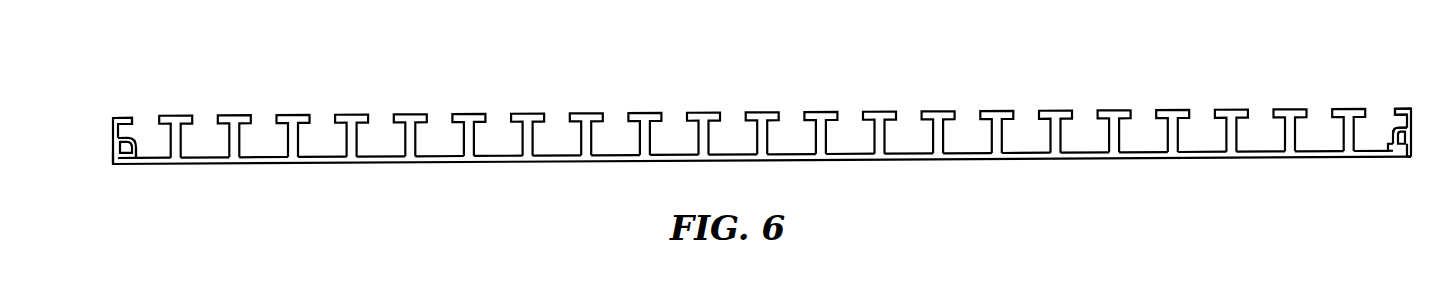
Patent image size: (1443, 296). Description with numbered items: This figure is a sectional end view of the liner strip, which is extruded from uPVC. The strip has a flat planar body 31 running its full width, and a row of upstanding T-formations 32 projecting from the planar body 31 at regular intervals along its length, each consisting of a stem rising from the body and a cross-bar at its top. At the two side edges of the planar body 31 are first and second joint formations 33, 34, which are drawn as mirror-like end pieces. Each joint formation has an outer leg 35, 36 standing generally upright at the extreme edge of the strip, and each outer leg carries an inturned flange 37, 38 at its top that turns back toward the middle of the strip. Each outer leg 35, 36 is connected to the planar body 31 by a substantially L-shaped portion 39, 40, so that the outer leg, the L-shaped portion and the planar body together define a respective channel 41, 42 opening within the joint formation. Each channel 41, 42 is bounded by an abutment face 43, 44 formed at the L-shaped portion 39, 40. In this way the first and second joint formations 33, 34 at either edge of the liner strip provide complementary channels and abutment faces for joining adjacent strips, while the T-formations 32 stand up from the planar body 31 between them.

The planar body 31 is at (1195, 159).
The T-formations 32 is at (1167, 110).
The first joint formation 33 is at (105, 108).
The second joint formation 34 is at (1425, 93).
The outer leg 35 is at (113, 162).
The outer leg 36 is at (1413, 158).
The inturned flange 37 is at (130, 118).
The inturned flange 38 is at (1408, 110).
The L-shaped portion 39 is at (137, 146).
The L-shaped portion 40 is at (1397, 139).
The channel 41 is at (122, 166).
The channel 42 is at (1403, 157).
The abutment face 43 is at (136, 163).
The abutment face 44 is at (1400, 132).